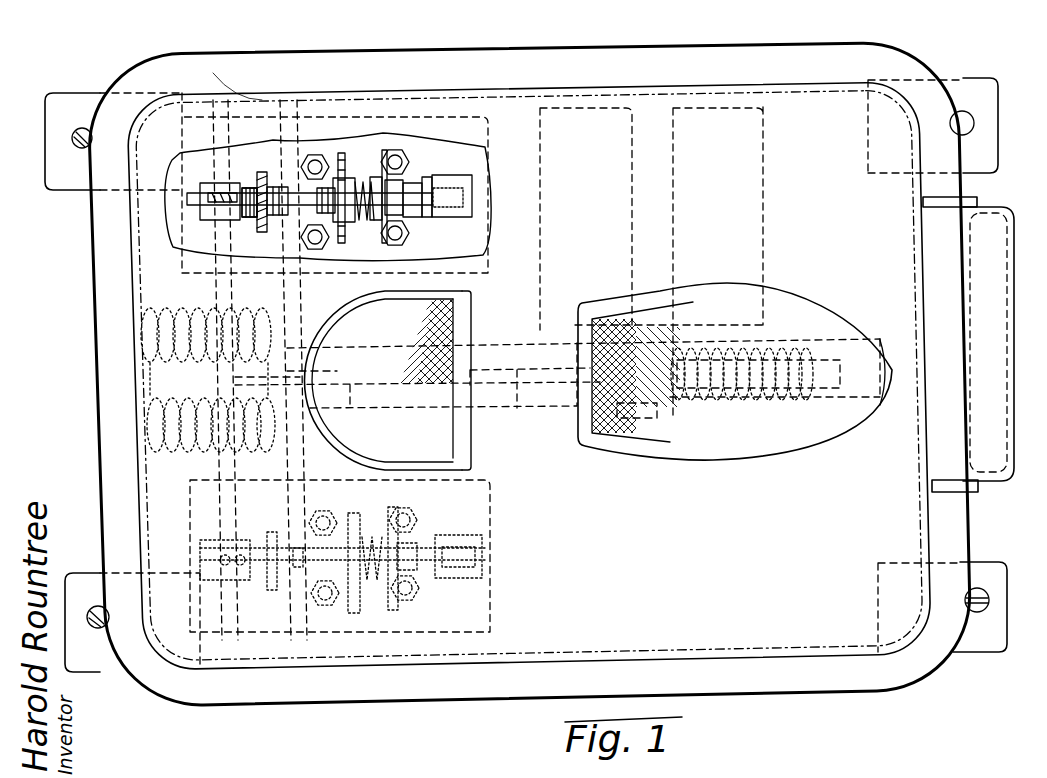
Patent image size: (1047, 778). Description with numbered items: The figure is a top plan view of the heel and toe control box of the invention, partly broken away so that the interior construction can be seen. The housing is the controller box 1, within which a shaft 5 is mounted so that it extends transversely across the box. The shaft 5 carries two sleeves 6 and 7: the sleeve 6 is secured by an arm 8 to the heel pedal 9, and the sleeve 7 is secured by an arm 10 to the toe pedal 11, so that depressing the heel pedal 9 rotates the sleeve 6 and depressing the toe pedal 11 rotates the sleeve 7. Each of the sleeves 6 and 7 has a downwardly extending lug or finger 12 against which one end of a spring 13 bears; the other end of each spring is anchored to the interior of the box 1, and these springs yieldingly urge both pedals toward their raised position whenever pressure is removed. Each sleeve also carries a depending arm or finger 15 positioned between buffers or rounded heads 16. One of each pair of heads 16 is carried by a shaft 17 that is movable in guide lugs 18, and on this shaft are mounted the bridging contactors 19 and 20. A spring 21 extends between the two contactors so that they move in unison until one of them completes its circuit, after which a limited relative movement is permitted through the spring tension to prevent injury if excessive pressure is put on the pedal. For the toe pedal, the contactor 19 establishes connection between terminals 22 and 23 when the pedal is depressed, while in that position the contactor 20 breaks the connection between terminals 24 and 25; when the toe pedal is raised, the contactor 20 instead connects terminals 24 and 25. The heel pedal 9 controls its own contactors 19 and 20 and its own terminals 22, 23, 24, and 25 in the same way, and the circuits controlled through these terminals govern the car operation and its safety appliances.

The controller box 1 is at (529, 365).
The shaft 5 is at (247, 663).
The sleeve 6 is at (312, 468).
The sleeve 7 is at (300, 302).
The arm 8 is at (373, 417).
The heel pedal 9 is at (460, 436).
The arm 10 is at (509, 351).
The toe pedal 11 is at (801, 303).
The lug or finger 12 is at (268, 302).
The spring 13 is at (158, 396).
The depending arm or finger 15 is at (256, 174).
The buffers or rounded heads 16 is at (250, 220).
The shaft 17 is at (421, 184).
The guide lugs 18 is at (463, 174).
The contactor 19 is at (348, 163).
The contactor 20 is at (395, 151).
The spring 21 is at (364, 216).
The terminal 22 is at (302, 162).
The terminal 23 is at (316, 240).
The terminal 24 is at (410, 520).
The terminal 25 is at (406, 232).